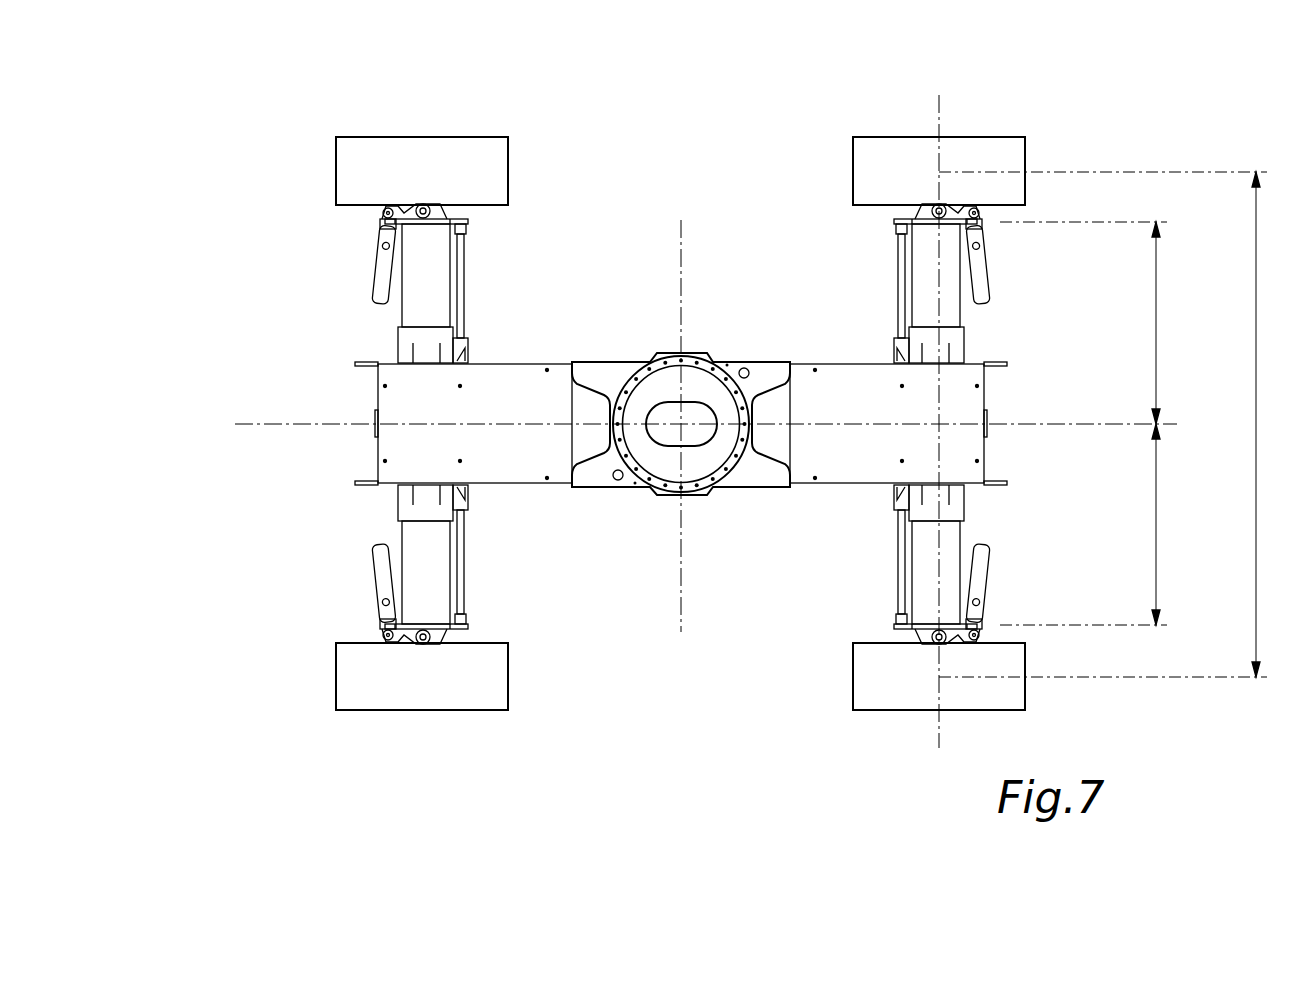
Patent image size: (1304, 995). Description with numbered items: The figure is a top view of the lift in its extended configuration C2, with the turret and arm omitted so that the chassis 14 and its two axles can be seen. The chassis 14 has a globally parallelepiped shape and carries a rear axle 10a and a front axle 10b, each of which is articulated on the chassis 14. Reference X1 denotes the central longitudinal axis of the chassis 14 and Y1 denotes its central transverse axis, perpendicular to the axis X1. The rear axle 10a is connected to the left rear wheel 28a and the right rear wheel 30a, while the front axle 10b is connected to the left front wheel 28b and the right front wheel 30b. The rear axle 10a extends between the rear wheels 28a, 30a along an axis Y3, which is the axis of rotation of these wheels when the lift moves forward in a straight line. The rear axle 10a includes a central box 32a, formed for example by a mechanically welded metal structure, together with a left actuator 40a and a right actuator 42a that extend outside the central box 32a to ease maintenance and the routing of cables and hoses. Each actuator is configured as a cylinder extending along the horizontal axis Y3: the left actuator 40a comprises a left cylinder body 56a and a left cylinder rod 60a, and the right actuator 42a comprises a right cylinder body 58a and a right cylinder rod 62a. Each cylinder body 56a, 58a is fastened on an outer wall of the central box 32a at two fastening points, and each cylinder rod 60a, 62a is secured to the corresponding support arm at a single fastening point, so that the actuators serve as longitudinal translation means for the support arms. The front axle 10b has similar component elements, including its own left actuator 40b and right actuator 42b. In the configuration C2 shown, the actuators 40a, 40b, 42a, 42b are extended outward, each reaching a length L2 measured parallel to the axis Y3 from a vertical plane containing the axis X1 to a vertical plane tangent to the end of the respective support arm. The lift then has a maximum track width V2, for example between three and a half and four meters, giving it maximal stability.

The chassis 14 is at (530, 400).
The rear axle 10a is at (1021, 300).
The front axle 10b is at (344, 304).
The left rear wheel 28a is at (897, 165).
The left front wheel 28b is at (403, 160).
The right rear wheel 30a is at (1000, 697).
The right front wheel 30b is at (386, 690).
The central box 32a is at (950, 340).
The left actuator 40a is at (831, 270).
The left actuator 40b is at (506, 289).
The right actuator 42a is at (859, 586).
The right actuator 42b is at (493, 551).
The left cylinder body 56a is at (893, 348).
The right cylinder body 58a is at (893, 500).
The left cylinder rod 60a is at (897, 322).
The right cylinder rod 62a is at (897, 546).
The central longitudinal axis X1 is at (685, 424).
The central transverse axis Y1 is at (680, 442).
The axis of the rear axle Y3 is at (939, 437).
The length L2 is at (1095, 423).
The maximum track width V2 is at (1115, 424).
The extended configuration C2 is at (238, 616).